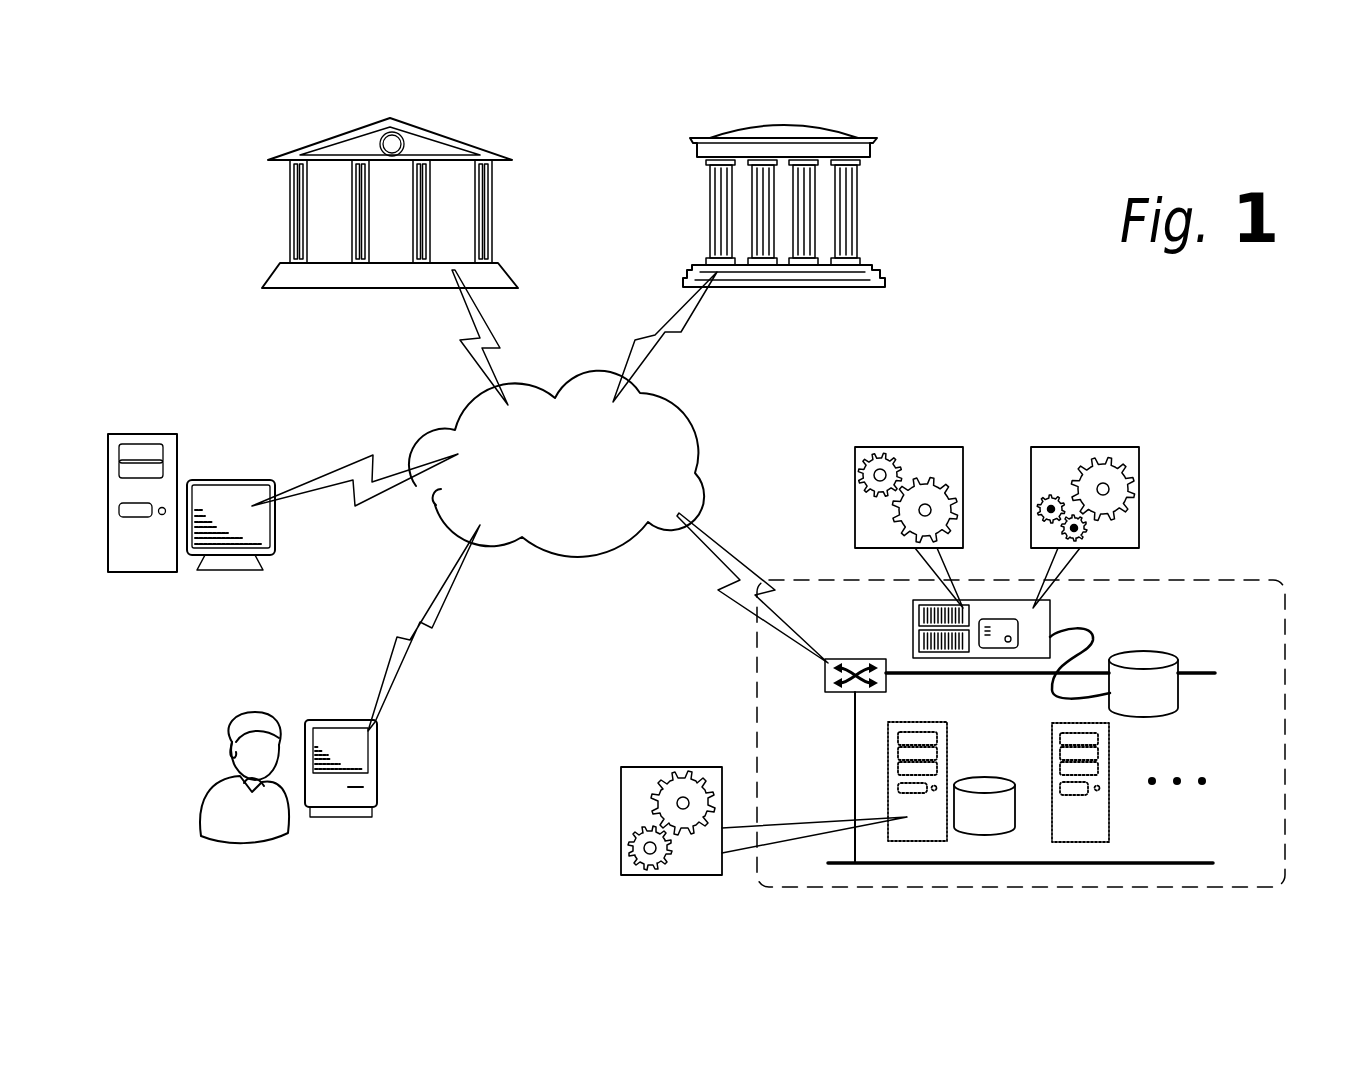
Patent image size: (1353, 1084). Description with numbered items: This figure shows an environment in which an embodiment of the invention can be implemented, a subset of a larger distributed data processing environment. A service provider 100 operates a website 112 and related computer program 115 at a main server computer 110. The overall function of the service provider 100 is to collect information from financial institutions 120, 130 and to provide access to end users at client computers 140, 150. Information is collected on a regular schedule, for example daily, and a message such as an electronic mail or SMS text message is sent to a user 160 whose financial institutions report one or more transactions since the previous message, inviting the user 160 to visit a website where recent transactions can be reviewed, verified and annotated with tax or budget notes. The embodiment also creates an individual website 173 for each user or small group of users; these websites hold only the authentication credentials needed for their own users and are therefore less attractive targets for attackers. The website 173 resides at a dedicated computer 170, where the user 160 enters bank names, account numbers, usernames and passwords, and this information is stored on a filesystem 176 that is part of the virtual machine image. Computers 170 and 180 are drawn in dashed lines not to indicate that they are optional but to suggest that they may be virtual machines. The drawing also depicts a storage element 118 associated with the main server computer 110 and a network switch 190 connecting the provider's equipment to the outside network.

The service provider 100 is at (1260, 622).
The main server computer 110 is at (913, 615).
The website 112 is at (853, 543).
The related computer program 115 is at (1140, 528).
The database 118 is at (1173, 707).
The financial institution 120 is at (290, 193).
The financial institution 130 is at (858, 180).
The client computer 140 is at (143, 572).
The client computer 150 is at (378, 797).
The user 160 is at (202, 816).
The dedicated computer 170 is at (943, 722).
The individual website 173 is at (621, 863).
The filesystem 176 is at (1008, 828).
The computer 180 is at (1110, 823).
The switch 190 is at (825, 692).